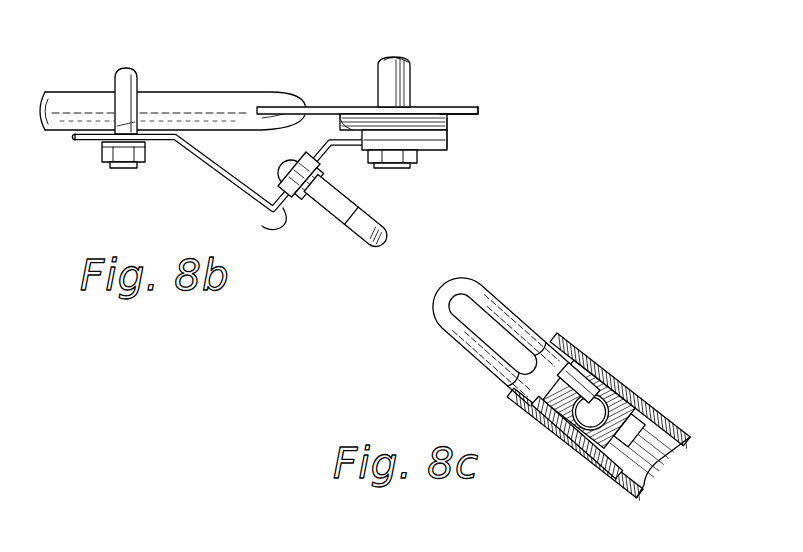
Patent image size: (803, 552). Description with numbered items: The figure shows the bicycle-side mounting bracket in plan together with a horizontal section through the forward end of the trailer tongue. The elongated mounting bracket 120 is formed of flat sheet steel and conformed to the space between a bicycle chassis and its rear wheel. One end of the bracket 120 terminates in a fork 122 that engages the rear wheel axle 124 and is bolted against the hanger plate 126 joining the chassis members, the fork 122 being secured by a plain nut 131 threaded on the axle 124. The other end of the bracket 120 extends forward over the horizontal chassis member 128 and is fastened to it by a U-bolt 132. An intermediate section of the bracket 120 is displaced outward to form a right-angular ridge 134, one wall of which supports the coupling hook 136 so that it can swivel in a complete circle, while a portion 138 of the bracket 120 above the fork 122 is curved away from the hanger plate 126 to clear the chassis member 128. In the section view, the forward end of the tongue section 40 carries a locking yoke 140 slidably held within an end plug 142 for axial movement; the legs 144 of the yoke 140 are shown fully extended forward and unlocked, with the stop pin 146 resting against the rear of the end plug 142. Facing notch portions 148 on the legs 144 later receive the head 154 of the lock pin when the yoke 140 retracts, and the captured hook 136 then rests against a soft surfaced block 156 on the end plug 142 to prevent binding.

In FIG. 8B, the mounting bracket 120 is at (222, 181).
In FIG. 8B, the fork 122 is at (436, 106).
In FIG. 8B, the axle 124 is at (384, 73).
In FIG. 8B, the hanger plate 126 is at (472, 112).
In FIG. 8B, the chassis member 128 is at (231, 100).
In FIG. 8B, the plain nut 131 is at (416, 153).
In FIG. 8B, the U-bolt 132 is at (125, 73).
In FIG. 8B, the right-angular ridge 134 is at (268, 222).
In FIG. 8B, the coupling hook 136 is at (371, 223).
In FIG. 8B, the portion of the bracket 138 is at (445, 132).
In FIG. 8C, the tongue section 40 is at (616, 494).
In FIG. 8C, the locking yoke 140 is at (431, 329).
In FIG. 8C, the end plug 142 is at (534, 418).
In FIG. 8C, the legs 144 is at (488, 363).
In FIG. 8C, the stop pin 146 is at (657, 418).
In FIG. 8C, the notch portions 148 is at (542, 341).
In FIG. 8C, the head 154 is at (594, 404).
In FIG. 8C, the soft surfaced block 156 is at (580, 362).